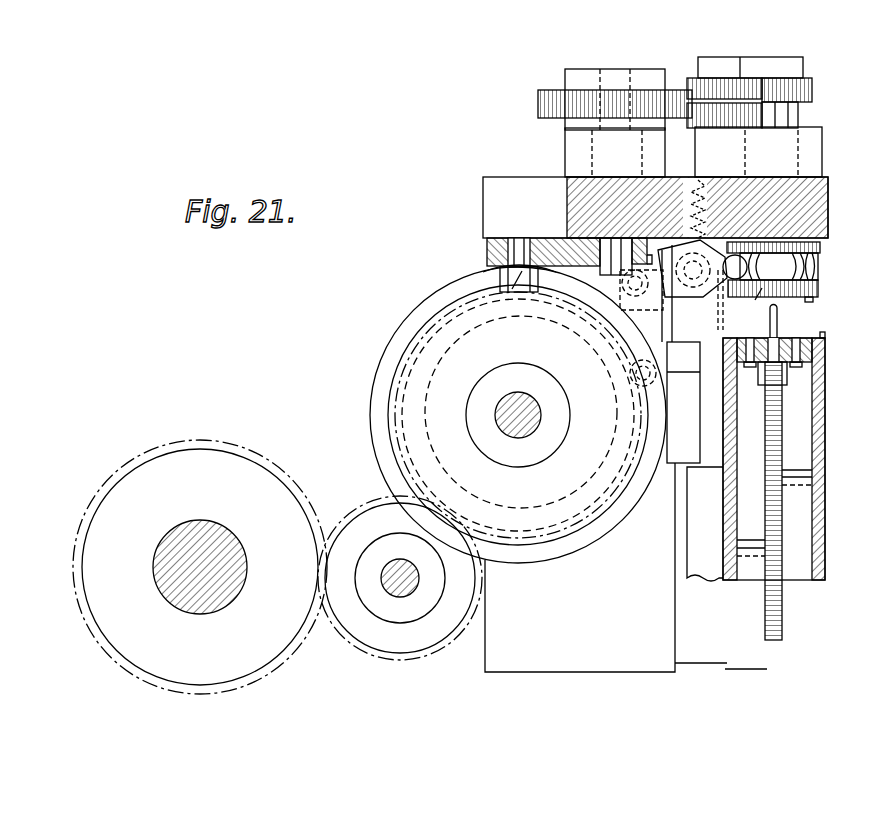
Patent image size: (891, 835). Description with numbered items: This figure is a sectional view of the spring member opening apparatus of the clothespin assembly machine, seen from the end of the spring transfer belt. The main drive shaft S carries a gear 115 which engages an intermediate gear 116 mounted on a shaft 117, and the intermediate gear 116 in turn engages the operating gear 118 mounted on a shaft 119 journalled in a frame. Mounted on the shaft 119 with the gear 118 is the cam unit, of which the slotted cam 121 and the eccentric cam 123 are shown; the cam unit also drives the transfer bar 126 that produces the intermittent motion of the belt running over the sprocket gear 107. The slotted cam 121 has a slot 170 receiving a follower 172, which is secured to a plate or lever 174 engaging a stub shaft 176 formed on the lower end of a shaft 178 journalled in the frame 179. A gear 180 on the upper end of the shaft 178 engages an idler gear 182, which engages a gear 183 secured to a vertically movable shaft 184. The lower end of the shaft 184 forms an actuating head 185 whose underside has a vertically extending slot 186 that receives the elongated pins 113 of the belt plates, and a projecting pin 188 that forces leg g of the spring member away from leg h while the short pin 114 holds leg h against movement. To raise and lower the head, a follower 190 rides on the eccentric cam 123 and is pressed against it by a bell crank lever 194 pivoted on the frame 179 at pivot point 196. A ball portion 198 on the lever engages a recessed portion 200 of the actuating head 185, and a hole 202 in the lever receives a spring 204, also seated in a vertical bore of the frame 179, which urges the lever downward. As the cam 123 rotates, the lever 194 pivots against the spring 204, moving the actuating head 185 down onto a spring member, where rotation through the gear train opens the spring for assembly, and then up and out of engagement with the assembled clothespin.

The sprocket gear 107 is at (775, 415).
The elongated pin 113 is at (778, 312).
The short pin 114 is at (826, 334).
The gear 115 is at (108, 480).
The intermediate gear 116 is at (392, 634).
The shaft 117 is at (407, 598).
The operating gear 118 is at (390, 386).
The shaft 119 is at (525, 432).
The slotted cam 121 is at (422, 312).
The eccentric cam 123 is at (410, 423).
The transfer bar 126 is at (680, 410).
The slot 170 is at (492, 282).
The follower 172 is at (512, 296).
The lever 174 is at (485, 250).
The stub shaft 176 is at (612, 262).
The shaft 178 is at (592, 146).
The frame 179 is at (828, 195).
The gear 180 is at (538, 101).
The idler gear 182 is at (713, 82).
The gear 183 is at (812, 91).
The shaft 184 is at (798, 150).
The actuating head 185 is at (820, 276).
The slot 186 is at (765, 300).
The projecting pin 188 is at (814, 299).
The follower 190 is at (640, 388).
The bell crank lever 194 is at (690, 300).
The pivot point 196 is at (533, 406).
The ball portion 198 is at (737, 282).
The recessed portion 200 is at (820, 257).
The hole 202 is at (701, 305).
The spring 204 is at (706, 200).
The main drive shaft S is at (190, 530).